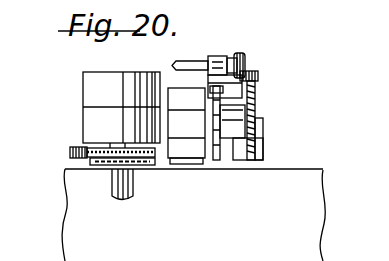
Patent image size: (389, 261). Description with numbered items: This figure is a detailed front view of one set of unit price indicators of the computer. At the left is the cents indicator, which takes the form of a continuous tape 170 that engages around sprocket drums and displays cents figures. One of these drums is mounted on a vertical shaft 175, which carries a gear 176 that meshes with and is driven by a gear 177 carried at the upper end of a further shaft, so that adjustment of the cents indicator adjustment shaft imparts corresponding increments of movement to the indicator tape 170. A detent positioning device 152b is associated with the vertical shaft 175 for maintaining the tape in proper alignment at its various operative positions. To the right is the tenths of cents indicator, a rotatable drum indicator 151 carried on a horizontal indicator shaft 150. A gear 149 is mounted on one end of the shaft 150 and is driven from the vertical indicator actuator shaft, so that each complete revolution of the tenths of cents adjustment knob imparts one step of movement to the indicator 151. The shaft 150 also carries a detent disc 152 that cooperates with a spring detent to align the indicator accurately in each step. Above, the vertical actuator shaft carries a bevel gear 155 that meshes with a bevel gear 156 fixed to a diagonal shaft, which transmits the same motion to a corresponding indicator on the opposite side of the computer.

The tape 170 is at (98, 82).
The gear 177 is at (70, 152).
The gear 176 is at (82, 160).
The vertical shaft 175 is at (120, 201).
The detent positioning device 152b is at (148, 166).
The tenths of cents indicator 151 is at (188, 160).
The detent disc 152 is at (219, 162).
The bevel gear 156 is at (241, 52).
The bevel gear 155 is at (258, 74).
The gear 149 is at (255, 100).
The horizontal indicator shaft 150 is at (265, 121).